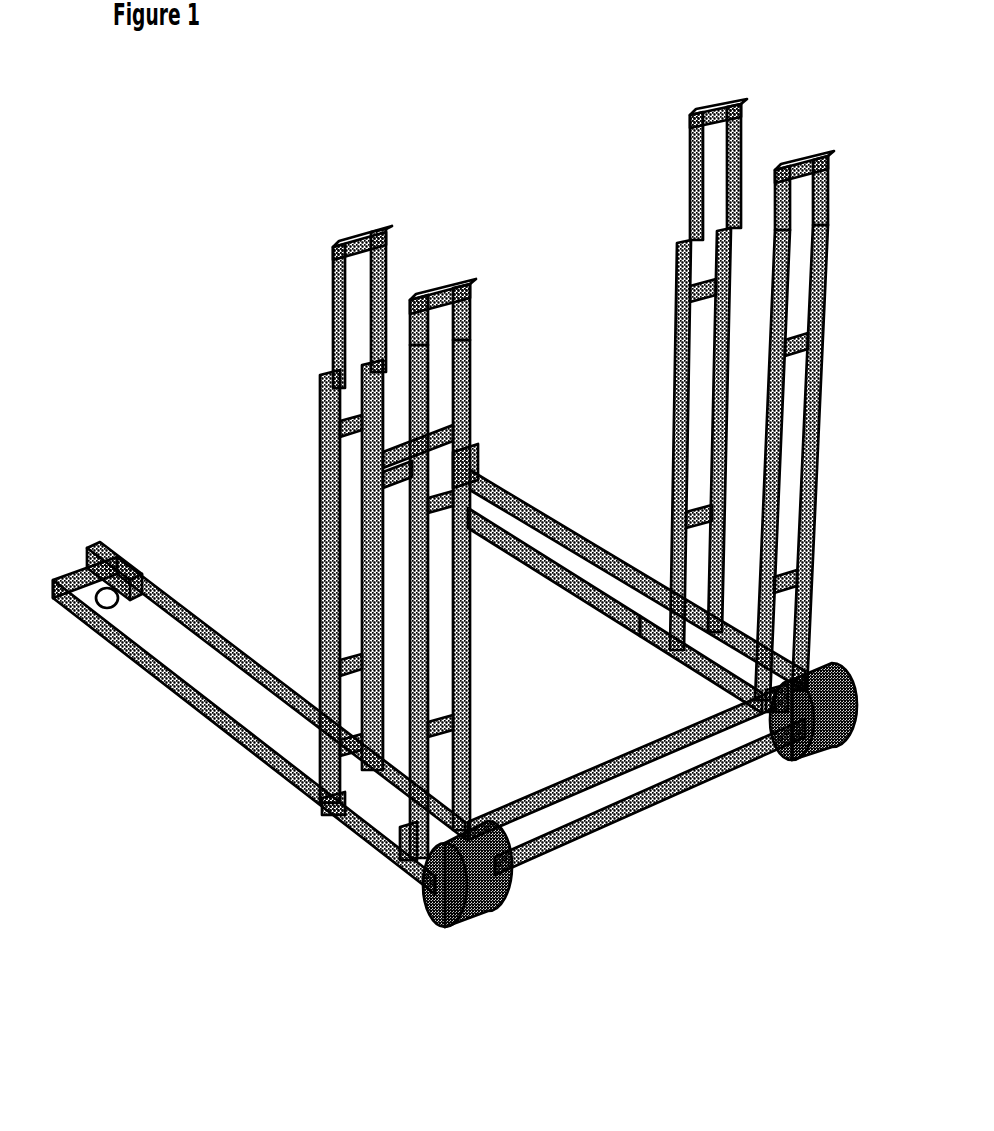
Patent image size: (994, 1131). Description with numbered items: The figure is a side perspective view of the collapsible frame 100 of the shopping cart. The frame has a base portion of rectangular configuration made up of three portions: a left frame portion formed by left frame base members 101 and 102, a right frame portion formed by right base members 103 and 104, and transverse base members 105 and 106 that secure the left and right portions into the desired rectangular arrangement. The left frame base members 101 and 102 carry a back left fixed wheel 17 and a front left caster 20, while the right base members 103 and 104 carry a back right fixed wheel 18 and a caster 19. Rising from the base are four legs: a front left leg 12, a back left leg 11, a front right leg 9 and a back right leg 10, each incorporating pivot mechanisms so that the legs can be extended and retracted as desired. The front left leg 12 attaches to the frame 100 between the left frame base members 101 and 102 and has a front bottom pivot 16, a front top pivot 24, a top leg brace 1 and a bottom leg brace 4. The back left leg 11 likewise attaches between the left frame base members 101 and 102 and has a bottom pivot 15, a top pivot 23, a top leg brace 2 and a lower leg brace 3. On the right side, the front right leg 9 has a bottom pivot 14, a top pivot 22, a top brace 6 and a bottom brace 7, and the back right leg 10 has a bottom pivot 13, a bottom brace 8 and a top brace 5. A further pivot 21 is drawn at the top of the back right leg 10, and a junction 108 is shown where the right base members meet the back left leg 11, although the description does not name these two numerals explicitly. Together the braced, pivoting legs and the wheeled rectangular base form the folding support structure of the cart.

The top leg brace 1 is at (353, 438).
The top leg brace 2 is at (437, 515).
The lower leg brace 3 is at (437, 719).
The bottom leg brace 4 is at (352, 656).
The top brace 5 is at (796, 368).
The top brace 6 is at (702, 288).
The bottom brace 7 is at (698, 508).
The bottom brace 8 is at (788, 596).
The front right leg 9 is at (688, 175).
The back right leg 10 is at (832, 270).
The back left leg 11 is at (473, 345).
The front left leg 12 is at (322, 296).
The bottom pivot 13 is at (830, 676).
The bottom pivot 14 is at (688, 683).
The bottom pivot 15 is at (410, 862).
The front bottom pivot 16 is at (330, 818).
The back left fixed wheel 17 is at (500, 915).
The back right fixed wheel 18 is at (830, 752).
The caster 19 is at (440, 426).
The front left caster 20 is at (85, 548).
The hook 21 is at (801, 158).
The top pivot 22 is at (707, 112).
The top pivot 23 is at (440, 278).
The front top pivot 24 is at (352, 228).
The collapsible frame 100 is at (160, 742).
The left frame base member 101 is at (130, 680).
The left frame base member 102 is at (200, 626).
The right base member 103 is at (572, 520).
The right base member 104 is at (515, 545).
The transverse base member 105 is at (650, 810).
The transverse base member 106 is at (598, 764).
The beam junction 108 is at (472, 464).